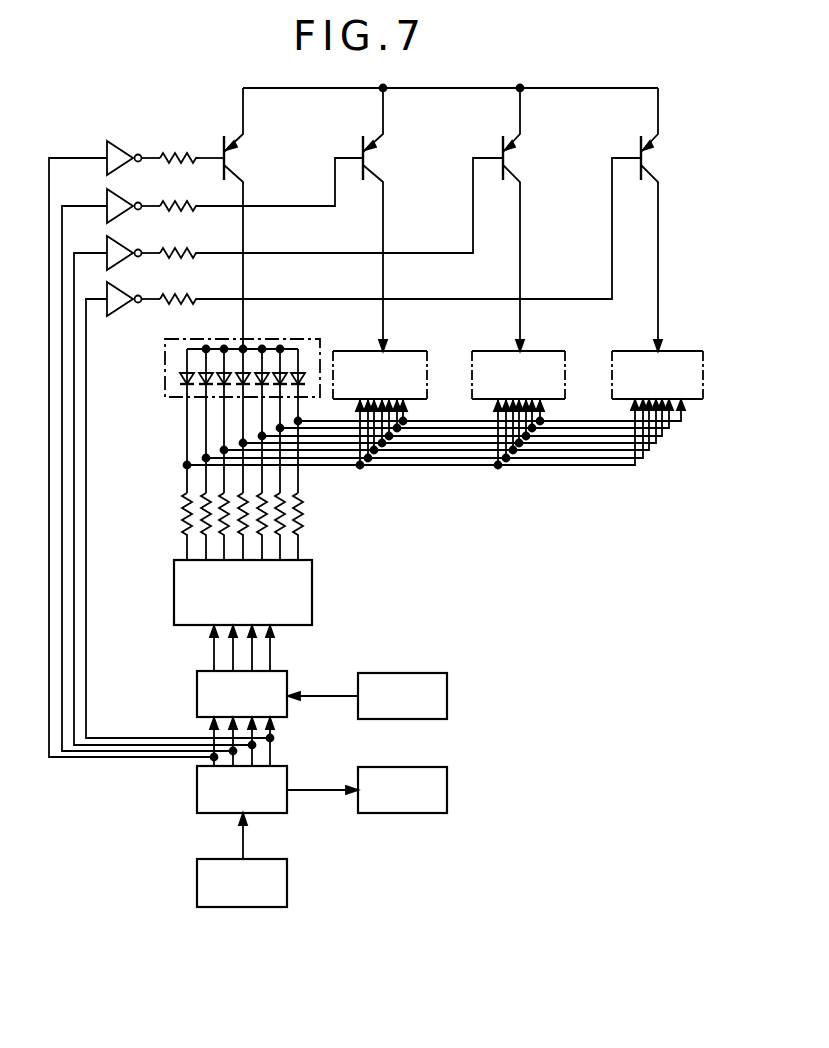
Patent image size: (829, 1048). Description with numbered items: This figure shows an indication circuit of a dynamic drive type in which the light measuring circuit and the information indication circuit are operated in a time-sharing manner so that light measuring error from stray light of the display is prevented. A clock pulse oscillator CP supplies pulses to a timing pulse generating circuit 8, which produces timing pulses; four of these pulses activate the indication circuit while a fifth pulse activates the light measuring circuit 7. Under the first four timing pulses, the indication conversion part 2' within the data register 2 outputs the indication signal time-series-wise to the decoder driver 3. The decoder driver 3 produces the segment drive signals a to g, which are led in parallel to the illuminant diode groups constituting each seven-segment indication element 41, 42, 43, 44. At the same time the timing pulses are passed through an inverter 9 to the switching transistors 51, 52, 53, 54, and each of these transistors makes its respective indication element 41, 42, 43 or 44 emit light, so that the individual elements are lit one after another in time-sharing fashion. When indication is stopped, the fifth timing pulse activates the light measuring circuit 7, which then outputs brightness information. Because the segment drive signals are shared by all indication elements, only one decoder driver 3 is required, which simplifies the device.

The inverter 9 is at (121, 150).
The switching transistor 51 is at (232, 157).
The switching transistor 52 is at (370, 157).
The switching transistor 53 is at (509, 157).
The switching transistor 54 is at (647, 157).
The segment indication element 41 is at (165, 364).
The segment indication element 42 is at (393, 351).
The segment indication element 43 is at (531, 351).
The segment indication element 44 is at (669, 351).
The decoder driver 3 is at (312, 595).
The indication conversion part 2' is at (223, 694).
The data register 2 is at (385, 696).
The timing pulse generating circuit 8 is at (197, 790).
The light measuring circuit 7 is at (447, 790).
The clock pulse oscillator CP is at (197, 882).